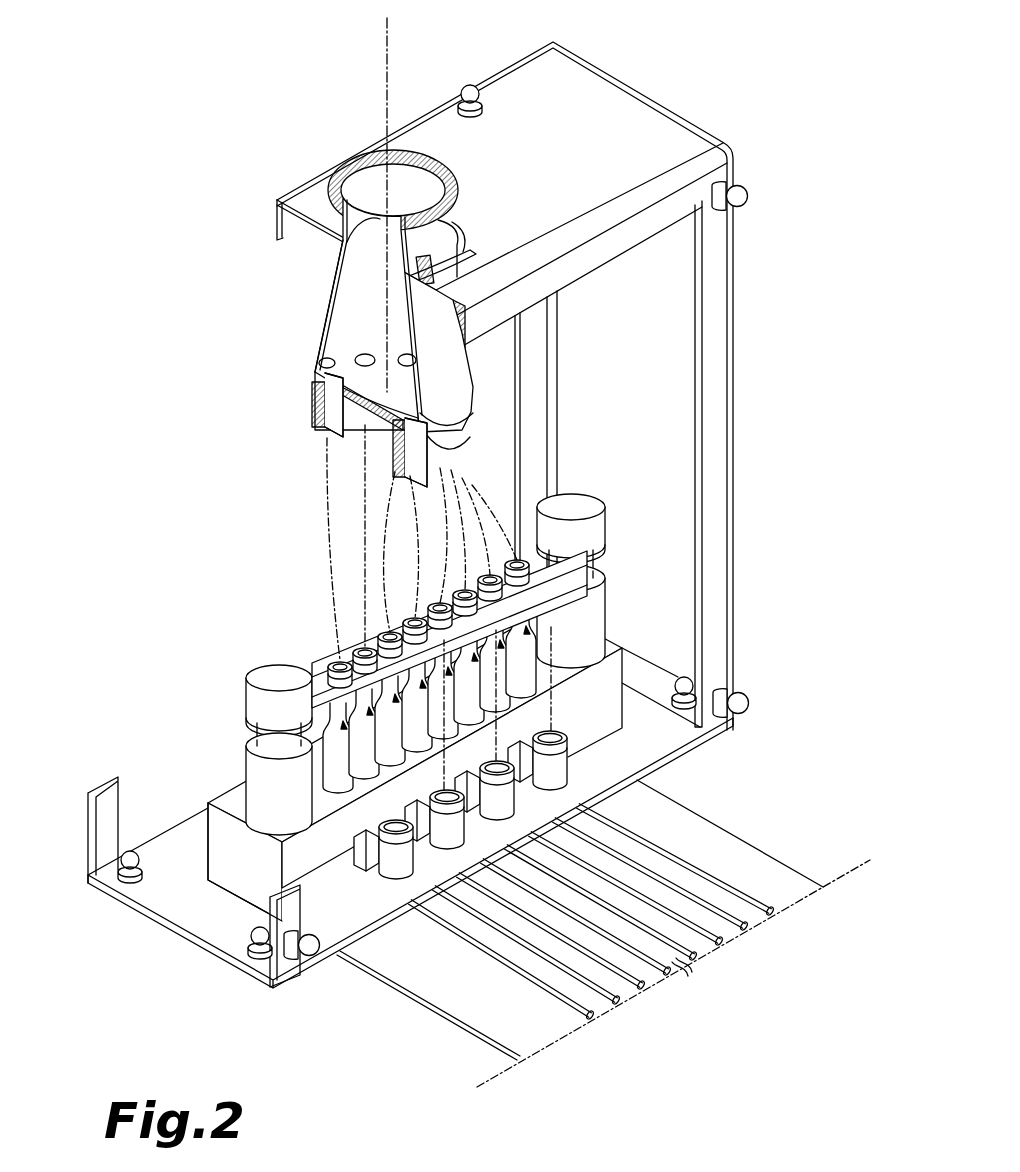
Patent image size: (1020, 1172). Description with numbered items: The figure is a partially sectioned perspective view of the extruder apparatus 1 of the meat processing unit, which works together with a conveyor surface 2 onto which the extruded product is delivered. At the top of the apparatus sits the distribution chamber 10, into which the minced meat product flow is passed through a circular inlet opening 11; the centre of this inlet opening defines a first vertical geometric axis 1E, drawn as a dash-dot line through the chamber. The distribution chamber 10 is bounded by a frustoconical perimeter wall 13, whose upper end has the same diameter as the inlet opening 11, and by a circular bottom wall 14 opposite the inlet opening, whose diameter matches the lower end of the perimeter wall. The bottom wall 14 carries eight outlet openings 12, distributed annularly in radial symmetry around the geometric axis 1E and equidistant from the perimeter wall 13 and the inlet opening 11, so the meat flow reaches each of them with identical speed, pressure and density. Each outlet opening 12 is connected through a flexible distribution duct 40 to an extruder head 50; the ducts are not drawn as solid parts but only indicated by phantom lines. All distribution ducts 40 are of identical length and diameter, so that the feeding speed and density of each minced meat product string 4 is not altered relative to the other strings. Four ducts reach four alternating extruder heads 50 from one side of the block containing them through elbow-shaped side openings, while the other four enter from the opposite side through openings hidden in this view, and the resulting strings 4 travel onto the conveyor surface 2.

The extruder apparatus 1 is at (147, 181).
The first vertical geometric axis 1E is at (387, 48).
The conveyor surface 2 is at (443, 987).
The minced meat product string 4 is at (703, 866).
The distribution chamber 10 is at (382, 337).
The circular inlet opening 11 is at (347, 242).
The outlet opening 12 is at (317, 370).
The frustoconical perimeter wall 13 is at (324, 310).
The circular bottom wall 14 is at (313, 401).
The distribution duct 40 is at (326, 492).
The extruder head 50 is at (292, 624).